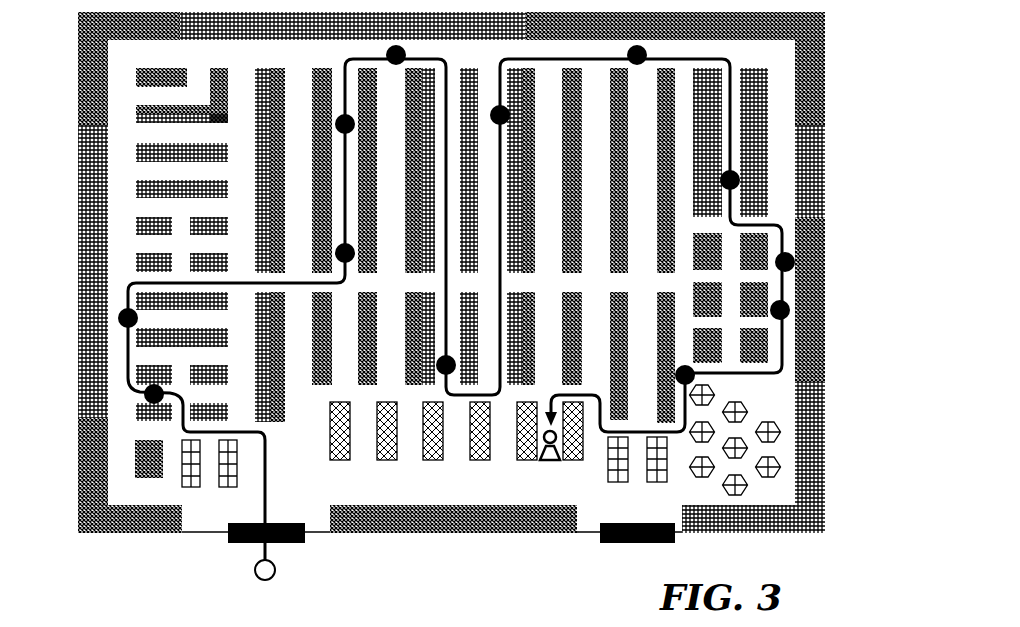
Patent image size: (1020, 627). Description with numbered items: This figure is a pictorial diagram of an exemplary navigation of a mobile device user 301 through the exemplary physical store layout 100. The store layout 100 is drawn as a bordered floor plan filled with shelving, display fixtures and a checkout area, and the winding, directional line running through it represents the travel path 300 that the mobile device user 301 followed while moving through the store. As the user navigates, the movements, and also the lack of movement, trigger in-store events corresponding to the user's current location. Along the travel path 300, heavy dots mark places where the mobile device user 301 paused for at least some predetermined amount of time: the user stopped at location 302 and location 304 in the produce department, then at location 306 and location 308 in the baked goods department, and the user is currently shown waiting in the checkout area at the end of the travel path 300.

The physical store layout 100 is at (828, 40).
The travel path 300 is at (263, 476).
The mobile device user 301 is at (547, 462).
The location 302 is at (145, 395).
The location 304 is at (118, 319).
The location 306 is at (795, 262).
The location 308 is at (790, 312).